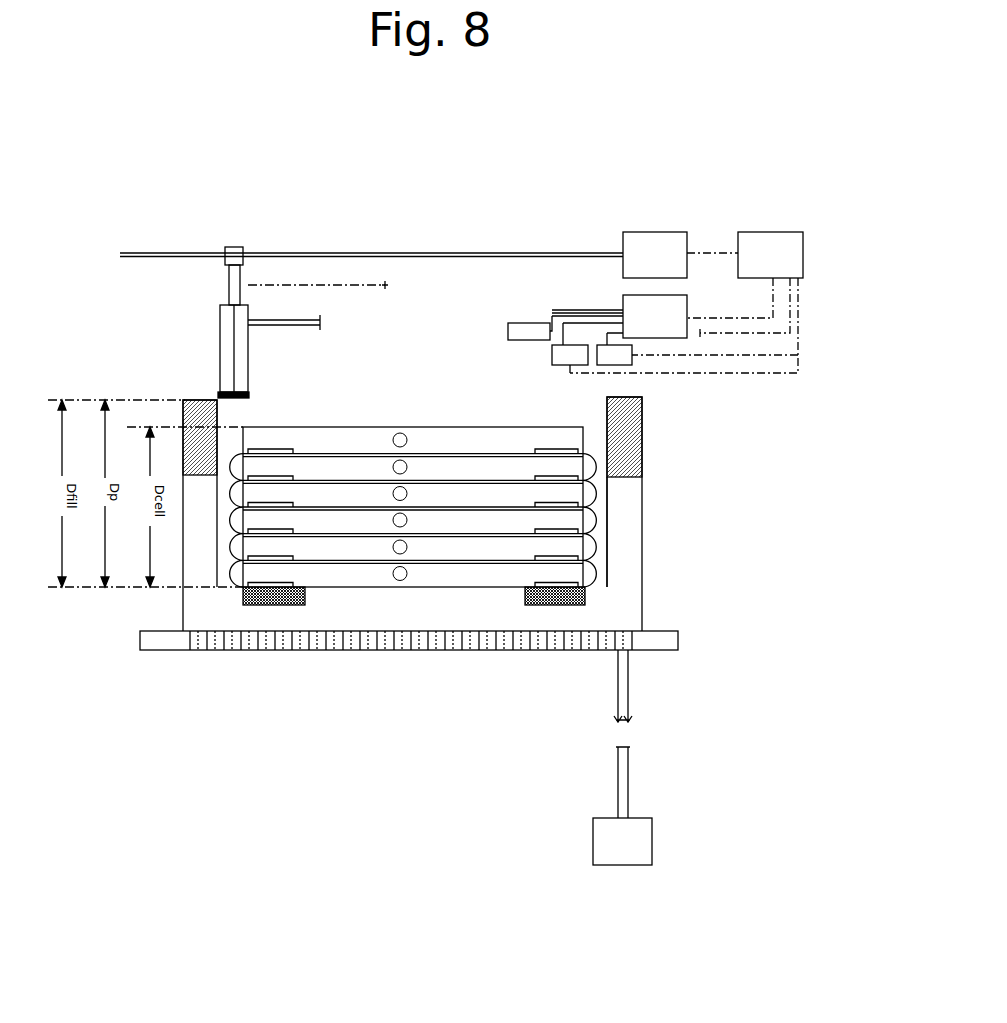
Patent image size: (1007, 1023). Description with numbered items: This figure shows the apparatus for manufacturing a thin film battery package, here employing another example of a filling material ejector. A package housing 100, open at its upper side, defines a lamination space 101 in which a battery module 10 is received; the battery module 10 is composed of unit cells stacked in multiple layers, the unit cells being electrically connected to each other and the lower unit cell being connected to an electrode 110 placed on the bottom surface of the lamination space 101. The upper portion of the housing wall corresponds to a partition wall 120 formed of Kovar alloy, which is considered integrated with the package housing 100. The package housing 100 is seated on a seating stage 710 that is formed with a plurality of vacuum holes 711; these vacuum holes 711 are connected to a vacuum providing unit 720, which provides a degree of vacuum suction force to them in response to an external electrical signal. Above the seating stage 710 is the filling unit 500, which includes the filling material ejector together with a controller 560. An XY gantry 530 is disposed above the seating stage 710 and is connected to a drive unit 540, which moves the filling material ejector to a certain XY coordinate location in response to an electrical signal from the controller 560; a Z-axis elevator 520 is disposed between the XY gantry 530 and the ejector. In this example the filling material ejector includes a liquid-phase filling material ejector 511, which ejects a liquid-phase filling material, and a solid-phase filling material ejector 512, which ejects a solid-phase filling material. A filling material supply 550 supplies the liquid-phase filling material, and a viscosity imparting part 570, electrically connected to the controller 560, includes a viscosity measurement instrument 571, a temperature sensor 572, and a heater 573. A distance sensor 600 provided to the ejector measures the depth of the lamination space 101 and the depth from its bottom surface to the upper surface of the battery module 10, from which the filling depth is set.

The filling unit 500 is at (385, 213).
The XY gantry 530 is at (249, 248).
The Z-axis elevator 520 is at (229, 285).
The liquid-phase filling material ejector 511 is at (220, 323).
The solid-phase filling material ejector 512 is at (236, 360).
The distance sensor 600 is at (249, 393).
The drive unit 540 is at (655, 255).
The controller 560 is at (686, 302).
The filling material supply 550 is at (619, 316).
The viscosity imparting part 570 is at (445, 322).
The heater 573 is at (508, 331).
The viscosity measurement instrument 571 is at (552, 355).
The temperature sensor 572 is at (597, 364).
The partition wall 120 is at (630, 440).
The lamination space 101 is at (602, 528).
The battery module 10 is at (545, 577).
The package housing 100 is at (630, 588).
The electrode 110 is at (588, 605).
The seating stage 710 is at (650, 645).
The vacuum holes 711 is at (500, 652).
The vacuum providing unit 720 is at (622, 757).